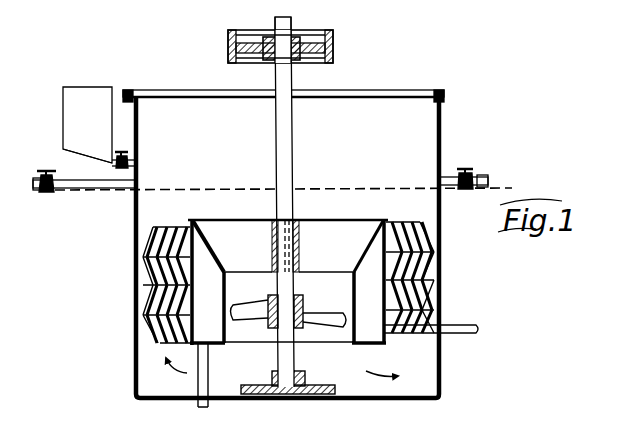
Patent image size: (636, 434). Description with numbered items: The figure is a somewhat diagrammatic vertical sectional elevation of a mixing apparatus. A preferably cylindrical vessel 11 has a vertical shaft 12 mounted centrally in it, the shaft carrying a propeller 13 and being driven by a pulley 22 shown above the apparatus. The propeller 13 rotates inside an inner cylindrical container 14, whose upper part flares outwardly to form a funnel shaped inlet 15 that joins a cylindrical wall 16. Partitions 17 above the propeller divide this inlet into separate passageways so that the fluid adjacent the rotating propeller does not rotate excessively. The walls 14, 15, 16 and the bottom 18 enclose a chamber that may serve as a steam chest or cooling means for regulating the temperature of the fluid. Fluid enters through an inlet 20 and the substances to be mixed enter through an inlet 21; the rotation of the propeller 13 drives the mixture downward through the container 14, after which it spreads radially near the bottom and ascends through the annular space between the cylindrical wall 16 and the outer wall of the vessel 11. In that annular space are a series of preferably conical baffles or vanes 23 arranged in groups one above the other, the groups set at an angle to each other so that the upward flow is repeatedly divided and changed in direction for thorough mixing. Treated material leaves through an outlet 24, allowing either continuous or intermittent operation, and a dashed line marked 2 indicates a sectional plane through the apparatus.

The section line 2- 2 is at (22, 205).
The cylindrical vessel 11 is at (441, 122).
The vertical shaft 12 is at (287, 126).
The propeller 13 is at (338, 320).
The inner cylindrical container 14 is at (259, 270).
The funnel shaped inlet 15 is at (207, 243).
The cylindrical wall 16 is at (426, 268).
The partitions 17 is at (344, 213).
The bottom 18 is at (369, 337).
The inlet 20 is at (80, 189).
The inlet 21 is at (130, 164).
The pulley 22 is at (333, 46).
The baffles or vanes 23 is at (432, 230).
The outlet 24 is at (478, 178).